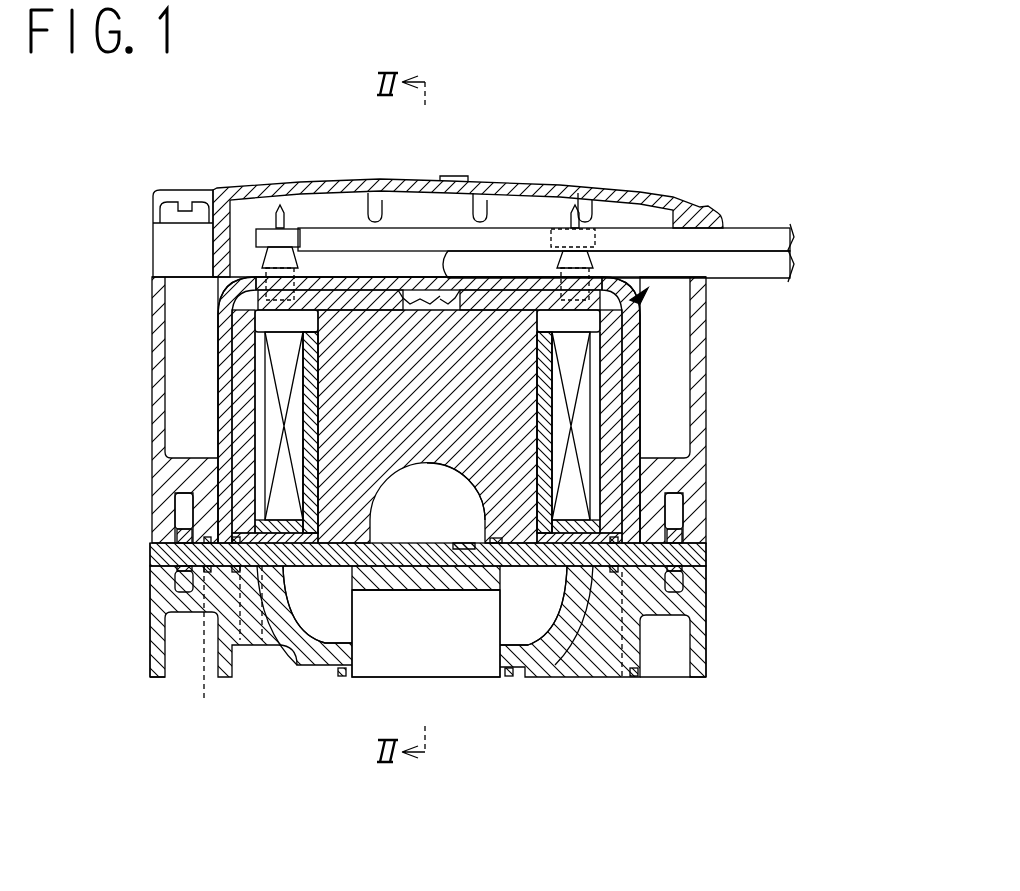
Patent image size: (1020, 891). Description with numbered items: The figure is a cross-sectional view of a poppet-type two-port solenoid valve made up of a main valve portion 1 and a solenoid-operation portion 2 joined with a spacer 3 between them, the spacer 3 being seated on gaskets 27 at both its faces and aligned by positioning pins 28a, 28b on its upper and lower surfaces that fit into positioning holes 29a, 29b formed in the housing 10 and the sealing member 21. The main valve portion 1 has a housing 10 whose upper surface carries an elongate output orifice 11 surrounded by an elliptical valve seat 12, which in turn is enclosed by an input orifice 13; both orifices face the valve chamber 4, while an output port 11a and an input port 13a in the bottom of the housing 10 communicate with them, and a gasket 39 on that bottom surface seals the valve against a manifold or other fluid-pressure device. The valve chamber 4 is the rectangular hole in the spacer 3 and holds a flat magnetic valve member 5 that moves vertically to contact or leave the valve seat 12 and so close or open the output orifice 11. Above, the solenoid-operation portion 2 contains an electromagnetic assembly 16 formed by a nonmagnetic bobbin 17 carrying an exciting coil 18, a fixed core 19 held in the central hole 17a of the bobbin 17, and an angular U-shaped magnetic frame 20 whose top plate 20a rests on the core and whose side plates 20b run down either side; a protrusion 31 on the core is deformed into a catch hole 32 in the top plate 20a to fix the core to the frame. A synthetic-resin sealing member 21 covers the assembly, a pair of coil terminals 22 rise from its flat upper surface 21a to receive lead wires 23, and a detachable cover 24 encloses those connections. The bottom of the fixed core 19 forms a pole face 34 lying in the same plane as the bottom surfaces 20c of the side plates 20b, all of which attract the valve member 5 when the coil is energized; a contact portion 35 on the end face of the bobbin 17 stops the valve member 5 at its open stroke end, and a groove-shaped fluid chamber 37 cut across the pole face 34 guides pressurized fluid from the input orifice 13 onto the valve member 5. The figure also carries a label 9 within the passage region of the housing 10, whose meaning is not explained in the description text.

The main valve portion 1 is at (728, 646).
The solenoid-operation portion 2 is at (728, 340).
The spacer 3 is at (706, 558).
The valve chamber 4 is at (253, 573).
The valve member 5 is at (465, 553).
The fluid passage 9 is at (340, 567).
The housing 10 is at (702, 674).
The output orifice 11 is at (537, 570).
The output port 11a is at (427, 648).
The valve seat 12 is at (566, 560).
The input orifice 13 is at (228, 647).
The input port 13a is at (298, 667).
The electromagnetic assembly 16 is at (642, 296).
The bobbin 17 is at (612, 415).
The central hole 17a is at (540, 432).
The exciting coil 18 is at (578, 424).
The fixed core 19 is at (352, 368).
The magnetic frame 20 is at (630, 332).
The top plate 20a is at (327, 284).
The side plates 20b is at (226, 384).
The bottom surfaces 20c is at (243, 500).
The sealing member 21 is at (160, 318).
The upper surface 21a is at (240, 196).
The coil terminals 22 is at (278, 205).
The lead wires 23 is at (604, 226).
The cover 24 is at (537, 228).
The gasket 27 is at (207, 578).
The positioning pin 28a is at (676, 540).
The positioning pin 28b is at (184, 536).
The positioning hole 29a is at (674, 505).
The positioning hole 29b is at (183, 505).
The protrusion 31 is at (400, 290).
The catch hole 32 is at (425, 296).
The pole face 34 is at (473, 543).
The contact portion 35 is at (517, 561).
The fluid chamber 37 is at (418, 521).
The gasket 39 is at (341, 677).